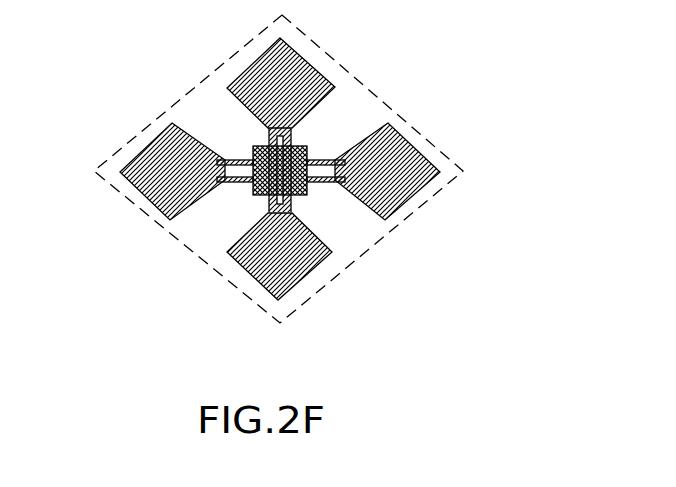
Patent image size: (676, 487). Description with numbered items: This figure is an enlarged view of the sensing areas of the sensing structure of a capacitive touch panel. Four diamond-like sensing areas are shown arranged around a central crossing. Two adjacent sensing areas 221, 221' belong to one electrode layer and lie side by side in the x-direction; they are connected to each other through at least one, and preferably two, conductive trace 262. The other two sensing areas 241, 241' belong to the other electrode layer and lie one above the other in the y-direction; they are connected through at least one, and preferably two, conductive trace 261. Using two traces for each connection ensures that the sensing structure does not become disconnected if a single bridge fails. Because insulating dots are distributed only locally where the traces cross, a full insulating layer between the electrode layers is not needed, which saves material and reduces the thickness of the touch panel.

The sensing area 241 is at (322, 64).
The sensing area 241' is at (327, 274).
The sensing area 221 is at (121, 144).
The sensing area 221' is at (444, 144).
The conductive trace 261 is at (293, 195).
The conductive trace 262 is at (235, 183).